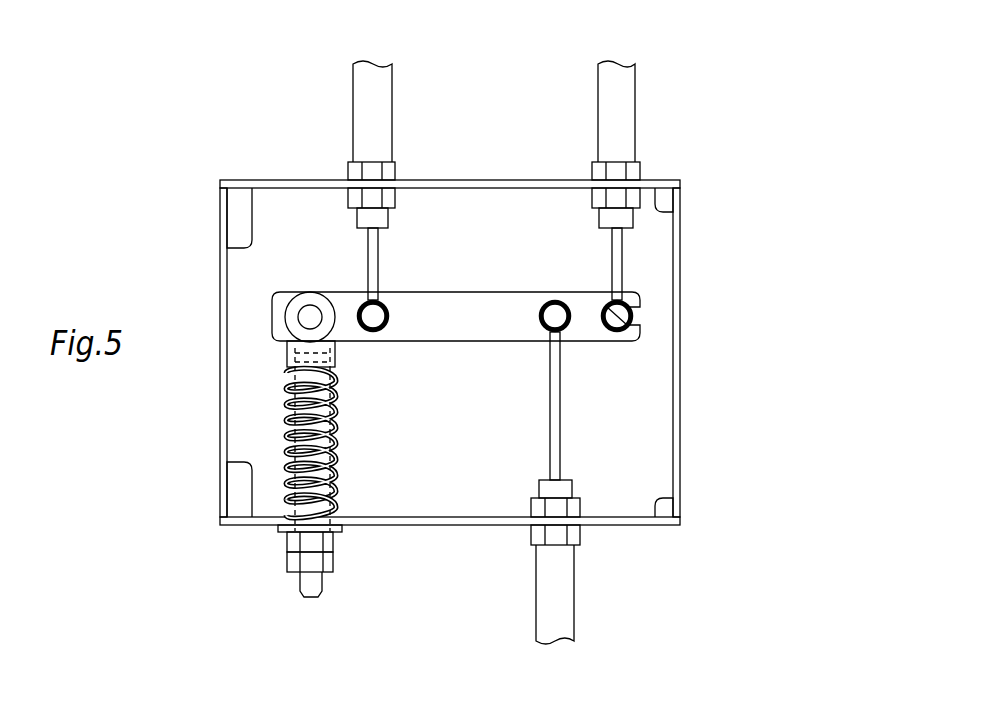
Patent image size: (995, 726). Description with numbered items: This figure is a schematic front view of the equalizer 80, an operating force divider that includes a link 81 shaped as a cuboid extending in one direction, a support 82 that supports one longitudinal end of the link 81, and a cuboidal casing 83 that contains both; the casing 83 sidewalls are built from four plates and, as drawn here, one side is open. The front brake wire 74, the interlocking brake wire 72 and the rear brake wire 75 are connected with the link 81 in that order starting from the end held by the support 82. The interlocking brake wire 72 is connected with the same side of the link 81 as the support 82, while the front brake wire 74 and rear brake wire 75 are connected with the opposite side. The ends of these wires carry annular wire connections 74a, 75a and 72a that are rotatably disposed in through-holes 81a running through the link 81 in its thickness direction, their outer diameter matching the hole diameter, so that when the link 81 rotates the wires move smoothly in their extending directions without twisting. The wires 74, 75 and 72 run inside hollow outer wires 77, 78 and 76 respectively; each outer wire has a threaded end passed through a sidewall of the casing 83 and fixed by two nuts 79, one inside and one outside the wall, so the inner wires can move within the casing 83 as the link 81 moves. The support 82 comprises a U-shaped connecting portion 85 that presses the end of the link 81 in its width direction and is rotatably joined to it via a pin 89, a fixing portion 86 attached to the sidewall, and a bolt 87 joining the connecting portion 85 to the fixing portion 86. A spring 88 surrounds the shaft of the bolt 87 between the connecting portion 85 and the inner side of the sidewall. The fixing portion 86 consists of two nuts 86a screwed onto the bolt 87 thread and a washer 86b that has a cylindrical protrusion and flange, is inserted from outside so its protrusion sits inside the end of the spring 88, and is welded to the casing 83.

The equalizer 80 is at (712, 138).
The casing 83 is at (472, 185).
The outer wire 77 is at (365, 102).
The outer wire 78 is at (610, 90).
The outer wire 76 is at (552, 613).
The nuts 79 is at (358, 198).
The front brake wire 74 is at (372, 243).
The rear brake wire 75 is at (615, 243).
The interlocking brake wire 72 is at (560, 423).
The link 81 is at (458, 343).
The through-holes 81a is at (386, 300).
The wire connection 74a is at (372, 333).
The wire connection 72a is at (542, 318).
The wire connection 75a is at (607, 330).
The connecting portion 85 is at (303, 302).
The pin 89 is at (310, 312).
The support 82 is at (345, 445).
The bolt 87 is at (335, 413).
The spring 88 is at (325, 485).
The fixing portion 86 is at (309, 569).
The nuts 86a is at (328, 563).
The washer 86b is at (282, 530).